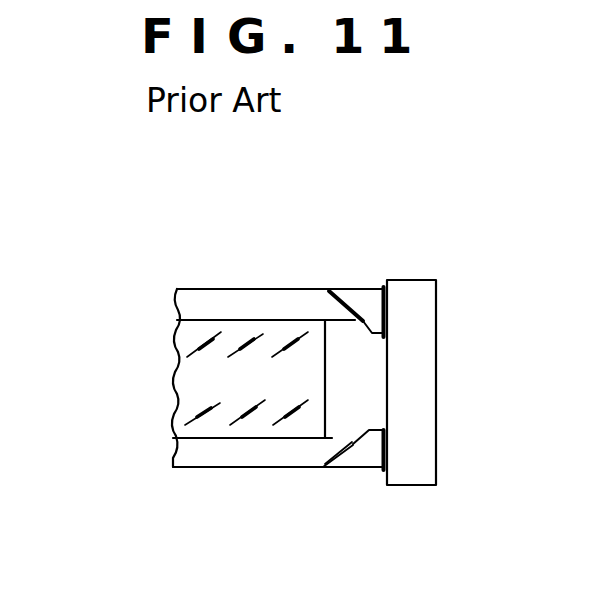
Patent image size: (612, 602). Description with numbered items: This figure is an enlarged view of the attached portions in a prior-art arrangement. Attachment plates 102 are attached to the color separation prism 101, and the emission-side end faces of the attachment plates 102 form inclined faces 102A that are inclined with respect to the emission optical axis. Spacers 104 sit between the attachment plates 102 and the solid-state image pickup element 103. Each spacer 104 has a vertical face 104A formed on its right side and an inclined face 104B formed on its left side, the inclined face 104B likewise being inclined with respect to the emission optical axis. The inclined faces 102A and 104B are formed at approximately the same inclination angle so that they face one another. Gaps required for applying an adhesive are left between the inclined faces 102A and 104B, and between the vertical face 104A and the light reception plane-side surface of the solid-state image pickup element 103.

The color separation prism 101 is at (190, 382).
The attachment plate 102 is at (219, 303).
The inclined face 102A is at (330, 307).
The solid-state image pickup element 103 is at (437, 347).
The spacer 104 is at (402, 366).
The vertical face 104A is at (388, 315).
The inclined face 104B is at (376, 330).